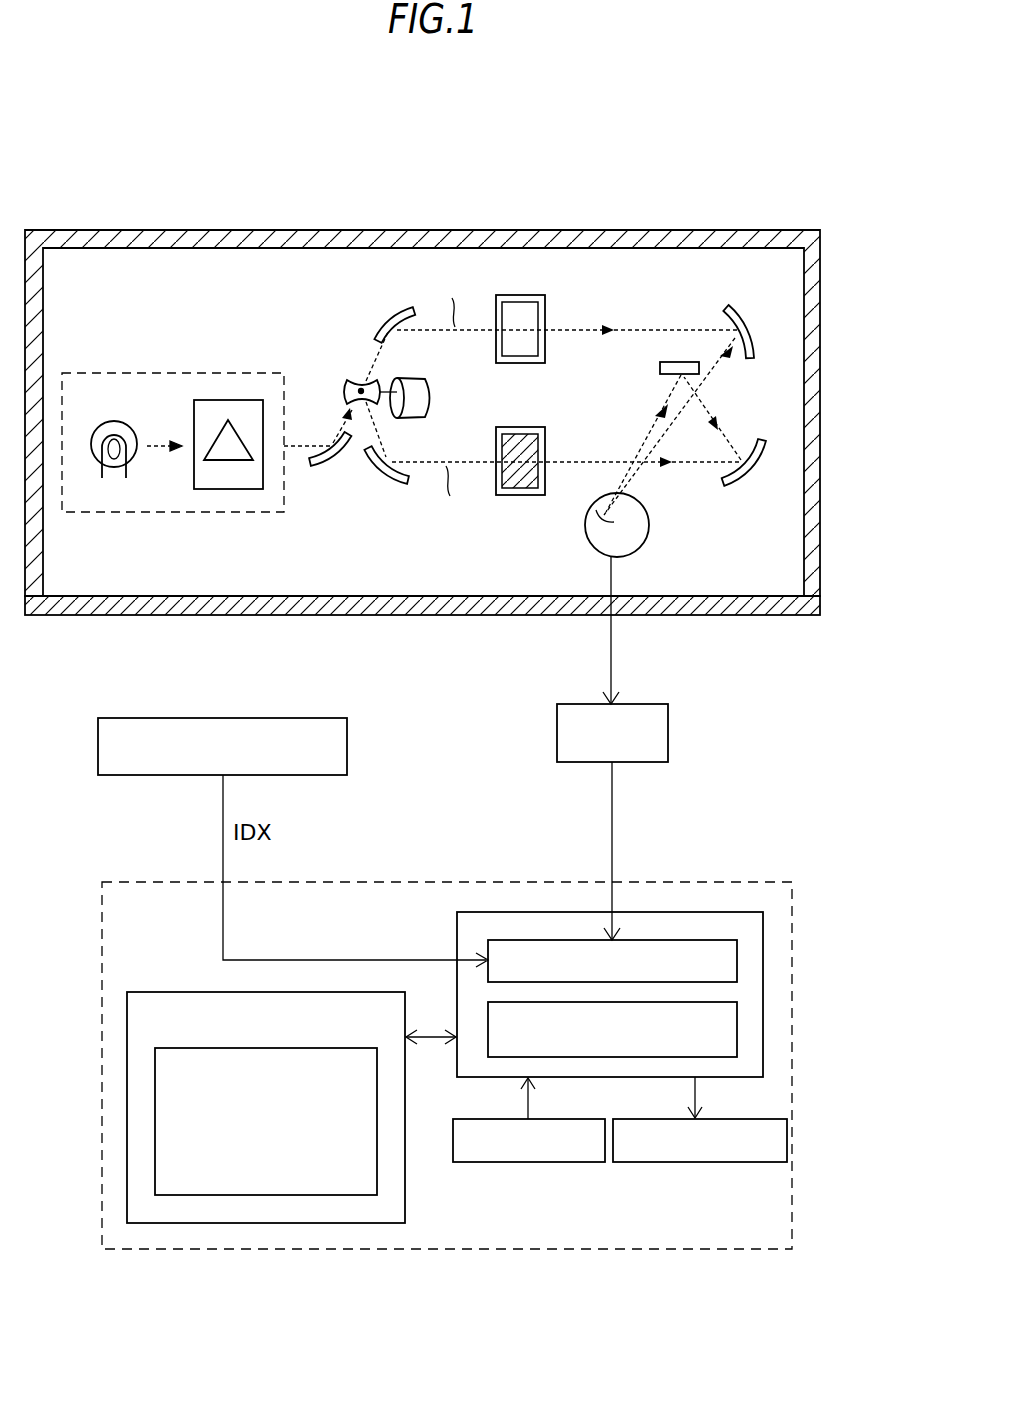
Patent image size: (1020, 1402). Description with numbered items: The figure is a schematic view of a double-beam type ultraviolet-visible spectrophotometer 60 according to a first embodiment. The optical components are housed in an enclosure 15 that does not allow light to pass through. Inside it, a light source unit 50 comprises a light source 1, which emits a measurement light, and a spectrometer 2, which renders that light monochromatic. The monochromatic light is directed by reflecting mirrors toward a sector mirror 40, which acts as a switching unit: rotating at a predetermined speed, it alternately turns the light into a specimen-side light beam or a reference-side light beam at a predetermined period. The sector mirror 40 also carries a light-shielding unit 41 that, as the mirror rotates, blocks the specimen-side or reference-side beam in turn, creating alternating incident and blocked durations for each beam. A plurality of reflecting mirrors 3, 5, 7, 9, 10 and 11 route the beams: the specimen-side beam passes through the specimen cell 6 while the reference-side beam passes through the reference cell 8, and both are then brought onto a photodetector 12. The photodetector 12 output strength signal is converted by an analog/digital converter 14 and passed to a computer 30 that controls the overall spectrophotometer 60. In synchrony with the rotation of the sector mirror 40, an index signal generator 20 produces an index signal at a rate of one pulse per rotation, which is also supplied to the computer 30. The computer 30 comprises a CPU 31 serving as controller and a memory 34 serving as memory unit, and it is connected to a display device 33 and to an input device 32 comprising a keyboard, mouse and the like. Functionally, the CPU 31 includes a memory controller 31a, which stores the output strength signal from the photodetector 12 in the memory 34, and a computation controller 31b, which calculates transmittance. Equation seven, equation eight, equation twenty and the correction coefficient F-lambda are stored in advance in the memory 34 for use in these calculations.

The light source 1 is at (114, 421).
The spectrometer 2 is at (230, 400).
The reflecting mirror 3 is at (327, 466).
The reflecting mirror 5 is at (382, 479).
The specimen cell 6 is at (522, 497).
The reflecting mirror 7 is at (395, 315).
The reference cell 8 is at (520, 295).
The reflecting mirror 9 is at (752, 479).
The reflecting mirror 10 is at (737, 305).
The reflecting mirror 11 is at (660, 368).
The photodetector 12 is at (650, 522).
The analog/digital converter 14 is at (668, 732).
The enclosure 15 is at (88, 229).
The index signal generator 20 is at (108, 718).
The computer 30 is at (102, 900).
The CPU 31 is at (720, 912).
The memory controller 31a is at (737, 960).
The computation controller 31b is at (737, 1030).
The input device 32 is at (528, 1163).
The display device 33 is at (690, 1163).
The memory 34 is at (127, 1080).
The sector mirror 40 is at (364, 364).
The light-shielding unit 41 is at (410, 398).
The light source unit 50 is at (172, 373).
The ultraviolet-visible spectrophotometer 60 is at (422, 152).